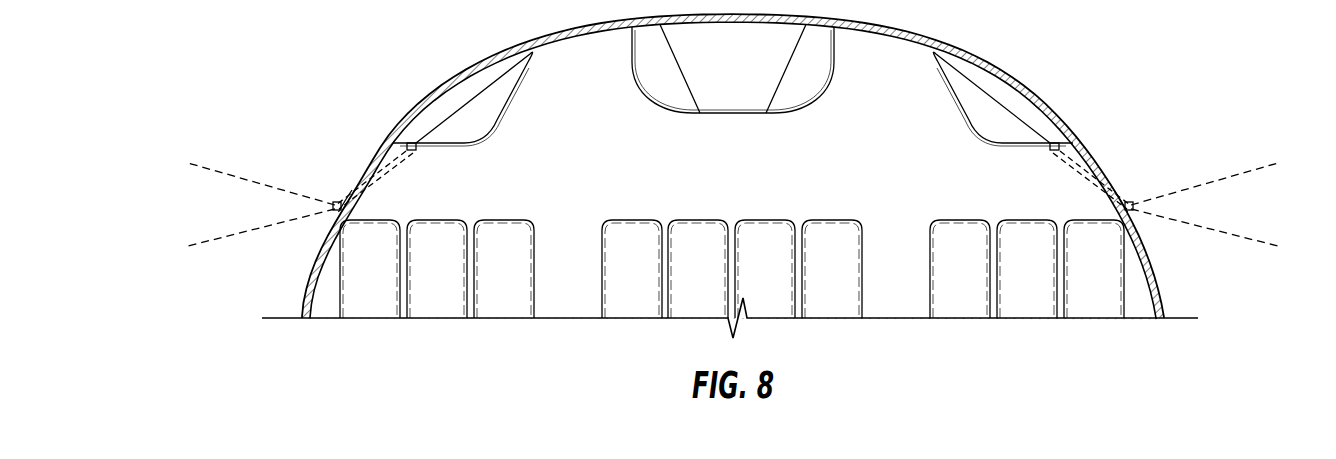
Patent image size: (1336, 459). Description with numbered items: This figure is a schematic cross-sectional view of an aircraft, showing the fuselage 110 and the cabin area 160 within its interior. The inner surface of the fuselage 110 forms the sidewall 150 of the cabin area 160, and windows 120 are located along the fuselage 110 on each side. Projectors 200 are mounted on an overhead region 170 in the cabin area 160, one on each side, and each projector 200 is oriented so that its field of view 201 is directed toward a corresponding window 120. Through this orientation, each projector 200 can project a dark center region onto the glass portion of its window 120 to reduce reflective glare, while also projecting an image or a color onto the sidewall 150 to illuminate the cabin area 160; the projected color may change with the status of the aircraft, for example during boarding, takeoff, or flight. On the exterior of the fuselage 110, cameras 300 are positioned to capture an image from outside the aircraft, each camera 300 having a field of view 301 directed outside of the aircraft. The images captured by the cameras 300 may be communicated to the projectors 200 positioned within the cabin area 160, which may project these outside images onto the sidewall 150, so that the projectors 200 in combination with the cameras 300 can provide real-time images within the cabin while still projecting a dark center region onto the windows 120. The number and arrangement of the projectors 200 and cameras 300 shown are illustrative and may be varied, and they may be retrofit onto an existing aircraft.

The fuselage 110 is at (302, 278).
The window 120 is at (340, 194).
The sidewall 150 is at (328, 278).
The cabin area 160 is at (753, 186).
The overhead region 170 is at (478, 136).
The projector 200 is at (415, 152).
The field of view 201 is at (354, 181).
The camera 300 is at (332, 212).
The field of view 301 is at (235, 221).